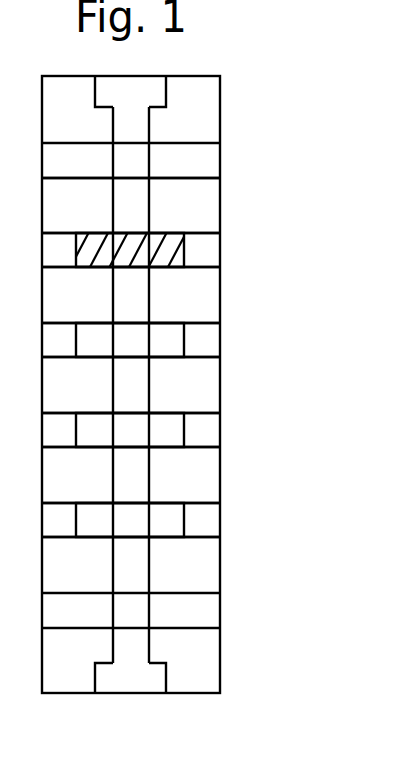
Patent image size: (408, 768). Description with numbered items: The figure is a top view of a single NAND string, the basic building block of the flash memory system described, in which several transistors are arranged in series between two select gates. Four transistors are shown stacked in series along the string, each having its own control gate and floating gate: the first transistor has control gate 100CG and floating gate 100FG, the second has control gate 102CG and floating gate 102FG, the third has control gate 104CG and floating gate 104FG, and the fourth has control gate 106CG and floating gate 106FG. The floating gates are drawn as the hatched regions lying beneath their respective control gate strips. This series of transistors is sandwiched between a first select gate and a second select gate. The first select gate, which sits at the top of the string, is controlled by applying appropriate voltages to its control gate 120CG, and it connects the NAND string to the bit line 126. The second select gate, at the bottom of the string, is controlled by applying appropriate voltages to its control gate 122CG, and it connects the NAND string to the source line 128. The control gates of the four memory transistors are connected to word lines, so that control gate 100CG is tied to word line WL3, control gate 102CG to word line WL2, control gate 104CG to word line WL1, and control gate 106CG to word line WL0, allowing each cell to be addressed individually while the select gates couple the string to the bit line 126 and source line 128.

The bit line 126 is at (167, 90).
The source line 128 is at (167, 675).
The control gate 120CG is at (203, 143).
The control gate 122CG is at (203, 593).
The control gate 100CG is at (165, 232).
The floating gate 100FG is at (202, 233).
The control gate 102CG is at (165, 322).
The floating gate 102FG is at (202, 323).
The control gate 104CG is at (165, 412).
The floating gate 104FG is at (202, 413).
The control gate 106CG is at (165, 502).
The floating gate 106FG is at (202, 503).